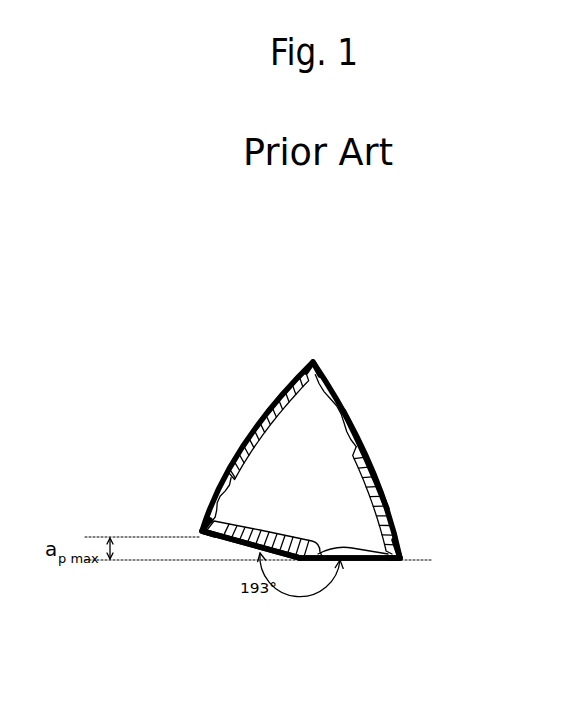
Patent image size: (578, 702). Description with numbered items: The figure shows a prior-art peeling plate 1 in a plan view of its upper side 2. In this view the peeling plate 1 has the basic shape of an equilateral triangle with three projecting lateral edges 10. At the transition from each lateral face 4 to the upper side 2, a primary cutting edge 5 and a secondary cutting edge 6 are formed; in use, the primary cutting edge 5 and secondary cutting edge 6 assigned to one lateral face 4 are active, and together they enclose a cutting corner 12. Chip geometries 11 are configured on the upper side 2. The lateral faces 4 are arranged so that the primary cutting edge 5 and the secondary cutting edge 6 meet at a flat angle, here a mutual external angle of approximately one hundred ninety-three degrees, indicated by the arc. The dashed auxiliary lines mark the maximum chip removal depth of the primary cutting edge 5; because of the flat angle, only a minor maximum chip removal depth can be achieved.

The peeling plate 1 is at (120, 412).
The upper side 2 is at (313, 453).
The lateral face 4 is at (237, 408).
The primary cutting edge 5 is at (240, 538).
The secondary cutting edge 6 is at (366, 560).
The lateral edge 10 is at (313, 363).
The chip geometry 11 is at (385, 495).
The cutting corner 12 is at (240, 442).